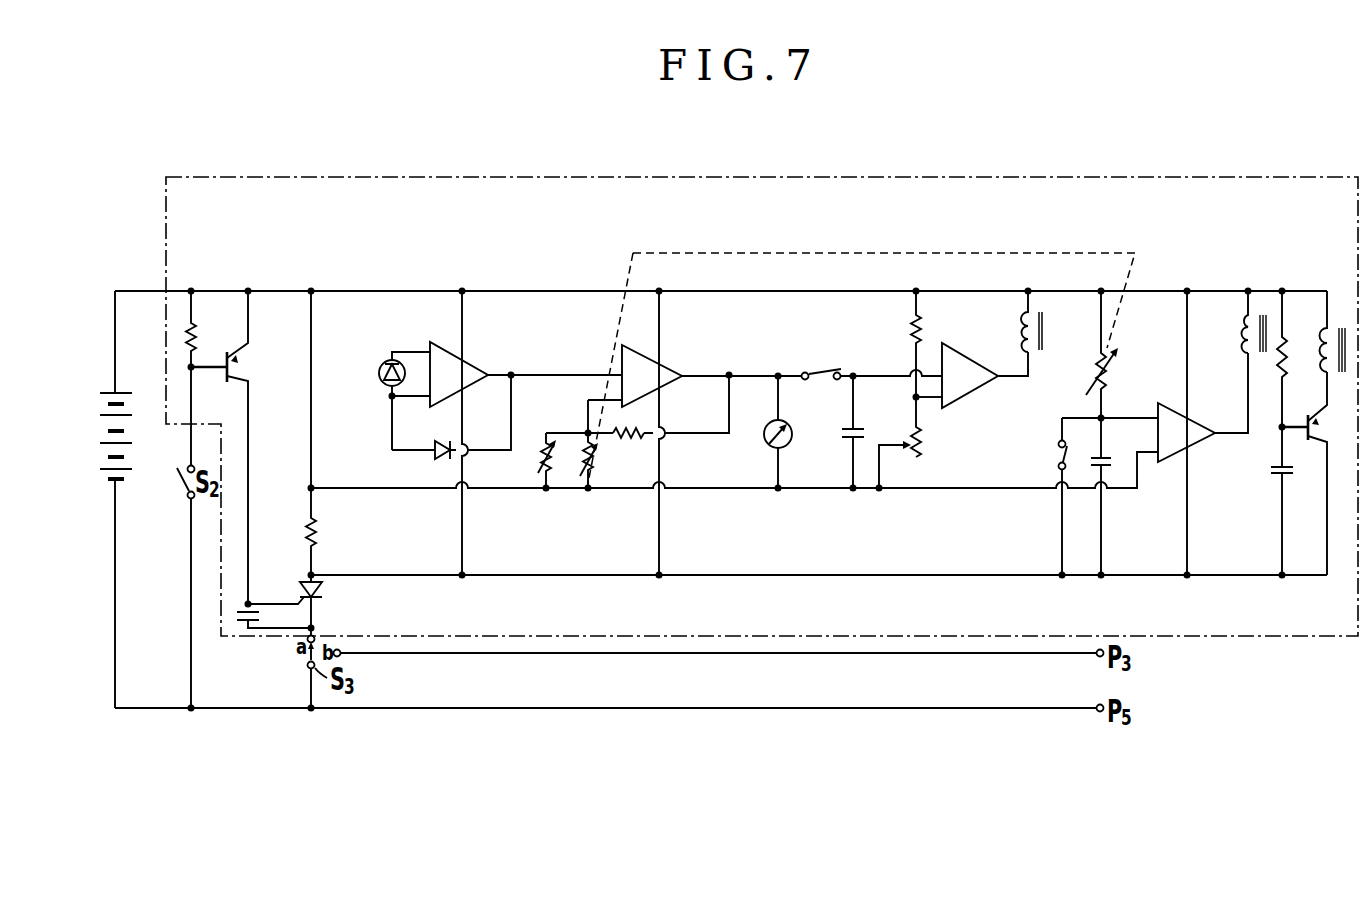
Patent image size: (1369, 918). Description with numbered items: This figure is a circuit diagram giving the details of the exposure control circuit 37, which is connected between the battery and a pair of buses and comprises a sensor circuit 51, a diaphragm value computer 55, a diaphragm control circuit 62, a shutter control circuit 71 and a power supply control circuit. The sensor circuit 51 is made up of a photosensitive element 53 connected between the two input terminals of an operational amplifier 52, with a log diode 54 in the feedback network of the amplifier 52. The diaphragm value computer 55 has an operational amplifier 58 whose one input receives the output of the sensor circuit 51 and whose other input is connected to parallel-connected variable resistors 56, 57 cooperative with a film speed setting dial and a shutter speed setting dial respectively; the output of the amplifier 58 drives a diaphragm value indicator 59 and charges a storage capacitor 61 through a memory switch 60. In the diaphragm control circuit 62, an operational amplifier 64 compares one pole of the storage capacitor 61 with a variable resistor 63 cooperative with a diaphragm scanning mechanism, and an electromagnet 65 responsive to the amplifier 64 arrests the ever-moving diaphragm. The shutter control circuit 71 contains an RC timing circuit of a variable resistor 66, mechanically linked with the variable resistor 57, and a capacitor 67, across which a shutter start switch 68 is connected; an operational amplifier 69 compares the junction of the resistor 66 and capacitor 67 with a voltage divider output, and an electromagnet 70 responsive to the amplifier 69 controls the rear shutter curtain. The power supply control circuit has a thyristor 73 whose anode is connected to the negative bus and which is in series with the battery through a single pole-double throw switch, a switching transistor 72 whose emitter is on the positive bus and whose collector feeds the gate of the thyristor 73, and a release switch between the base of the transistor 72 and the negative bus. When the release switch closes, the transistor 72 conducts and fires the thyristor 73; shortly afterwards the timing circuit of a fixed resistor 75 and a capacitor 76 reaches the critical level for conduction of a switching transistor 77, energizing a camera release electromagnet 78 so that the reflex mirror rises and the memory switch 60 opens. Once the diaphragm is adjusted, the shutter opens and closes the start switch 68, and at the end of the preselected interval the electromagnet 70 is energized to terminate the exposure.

The exposure control circuit 37 is at (882, 192).
The sensor circuit 51 is at (515, 334).
The operational amplifier 52 is at (432, 346).
The photosensitive element 53 is at (380, 366).
The log diode 54 is at (437, 453).
The diaphragm value computer 55 is at (708, 354).
The variable resistor 56 is at (538, 464).
The variable resistor 57 is at (594, 458).
The operational amplifier 58 is at (647, 362).
The diaphragm value indicator 59 is at (788, 434).
The memory switch 60 is at (823, 372).
The storage capacitor 61 is at (865, 437).
The diaphragm control circuit 62 is at (995, 339).
The variable resistor 63 is at (922, 452).
The operational amplifier 64 is at (974, 384).
The electromagnet 65 is at (1030, 348).
The variable resistor 66 is at (1110, 380).
The capacitor 67 is at (1110, 462).
The shutter start switch 68 is at (1058, 455).
The operational amplifier 69 is at (1172, 455).
The electromagnet 70 is at (1240, 336).
The shutter control circuit 71 is at (1183, 392).
The switching transistor 72 is at (238, 358).
The thyristor 73 is at (320, 590).
The fixed resistor 75 is at (1287, 376).
The capacitor 76 is at (1272, 471).
The switching transistor 77 is at (1318, 424).
The camera release electromagnet 78 is at (1336, 322).